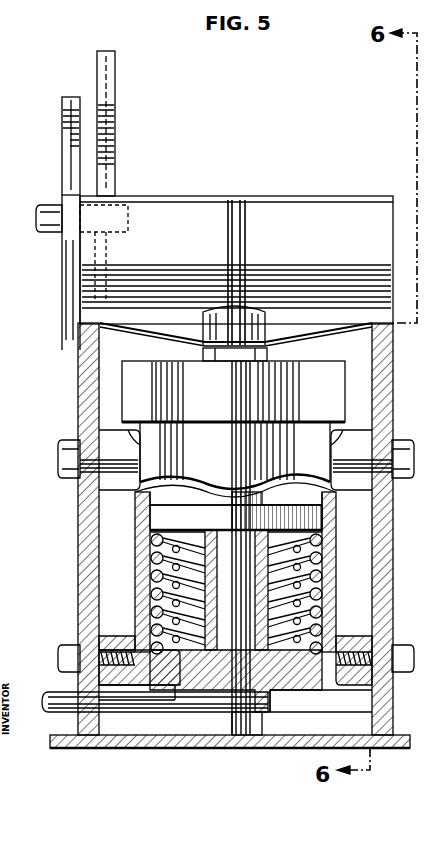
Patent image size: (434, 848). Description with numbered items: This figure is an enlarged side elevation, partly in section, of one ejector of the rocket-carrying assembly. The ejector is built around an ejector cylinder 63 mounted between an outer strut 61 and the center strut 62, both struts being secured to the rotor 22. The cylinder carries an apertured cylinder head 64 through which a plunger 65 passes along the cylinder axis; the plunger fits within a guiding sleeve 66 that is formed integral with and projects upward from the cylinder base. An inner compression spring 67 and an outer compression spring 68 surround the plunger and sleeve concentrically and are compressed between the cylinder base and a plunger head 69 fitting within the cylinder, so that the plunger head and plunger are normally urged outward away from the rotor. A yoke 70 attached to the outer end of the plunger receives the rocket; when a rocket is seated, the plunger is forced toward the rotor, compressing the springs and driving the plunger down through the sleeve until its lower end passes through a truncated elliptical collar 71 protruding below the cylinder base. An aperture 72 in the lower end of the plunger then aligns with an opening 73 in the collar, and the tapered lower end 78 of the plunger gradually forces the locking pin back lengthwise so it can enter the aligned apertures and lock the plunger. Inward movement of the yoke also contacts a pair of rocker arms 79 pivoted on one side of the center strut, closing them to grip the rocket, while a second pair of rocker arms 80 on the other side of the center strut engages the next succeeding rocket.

The rotor 22 is at (273, 748).
The outer strut 61 is at (393, 353).
The center strut 62 is at (78, 383).
The ejector cylinder 63 is at (240, 463).
The apertured cylinder head 64 is at (148, 375).
The plunger 65 is at (270, 350).
The guiding sleeve 66 is at (210, 535).
The inner compression spring 67 is at (300, 547).
The outer compression spring 68 is at (315, 578).
The plunger head 69 is at (180, 529).
The yoke 70 is at (306, 200).
The truncated elliptical collar 71 is at (265, 712).
The aperture 72 is at (222, 700).
The opening 73 is at (178, 712).
The tapered lower end 78 is at (236, 736).
The rocker arm 79 is at (112, 85).
The second rocker arm 80 is at (68, 105).